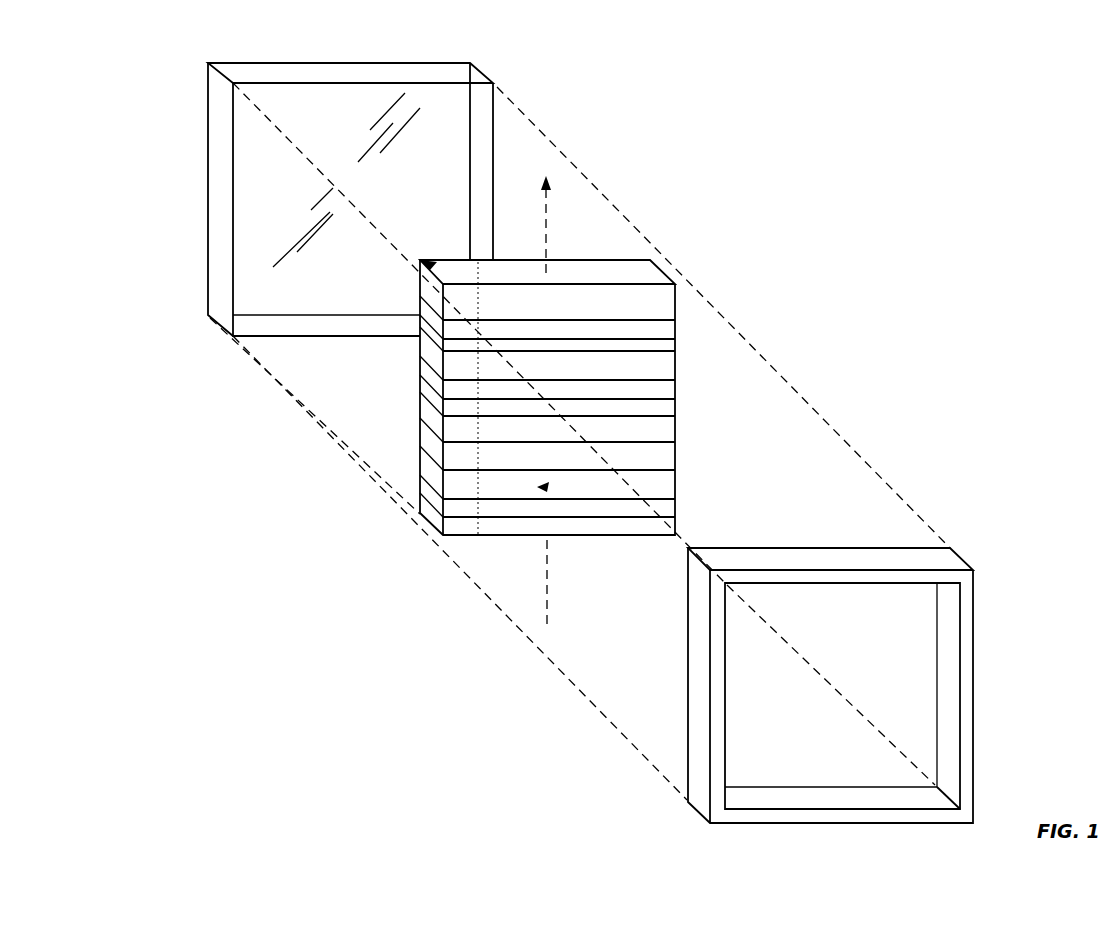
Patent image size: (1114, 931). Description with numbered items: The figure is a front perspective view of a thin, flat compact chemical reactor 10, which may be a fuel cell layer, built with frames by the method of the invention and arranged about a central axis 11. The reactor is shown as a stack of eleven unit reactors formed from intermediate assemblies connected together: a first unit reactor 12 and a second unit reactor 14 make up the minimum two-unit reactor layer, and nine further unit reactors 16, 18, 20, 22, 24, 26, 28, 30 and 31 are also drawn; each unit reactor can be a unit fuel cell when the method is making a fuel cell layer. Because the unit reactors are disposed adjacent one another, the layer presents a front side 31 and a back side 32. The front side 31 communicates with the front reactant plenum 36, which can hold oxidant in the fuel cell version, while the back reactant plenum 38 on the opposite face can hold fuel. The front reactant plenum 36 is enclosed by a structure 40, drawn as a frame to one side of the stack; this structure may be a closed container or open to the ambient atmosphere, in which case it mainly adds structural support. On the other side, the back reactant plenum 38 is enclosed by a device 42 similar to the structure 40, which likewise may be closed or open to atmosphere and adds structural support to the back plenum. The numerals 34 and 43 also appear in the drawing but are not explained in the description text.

The compact chemical reactor 10 is at (423, 517).
The central axis 11 is at (547, 205).
The unit reactor 12 is at (660, 452).
The unit reactor 14 is at (660, 480).
The unit reactor 16 is at (660, 510).
The unit reactor 18 is at (593, 525).
The unit reactor 20 is at (660, 425).
The unit reactor 22 is at (660, 402).
The unit reactor 24 is at (660, 390).
The unit reactor 26 is at (658, 370).
The unit reactor 28 is at (657, 343).
The unit reactor 30 is at (660, 327).
The unit reactor / front side 31 is at (660, 300).
The back side 32 is at (540, 488).
The top surface of stack 34 is at (448, 260).
The front reactant plenum 36 is at (908, 668).
The back reactant plenum 38 is at (432, 85).
The structure 40 is at (965, 600).
The device 42 is at (407, 60).
The glass pane 43 is at (257, 288).